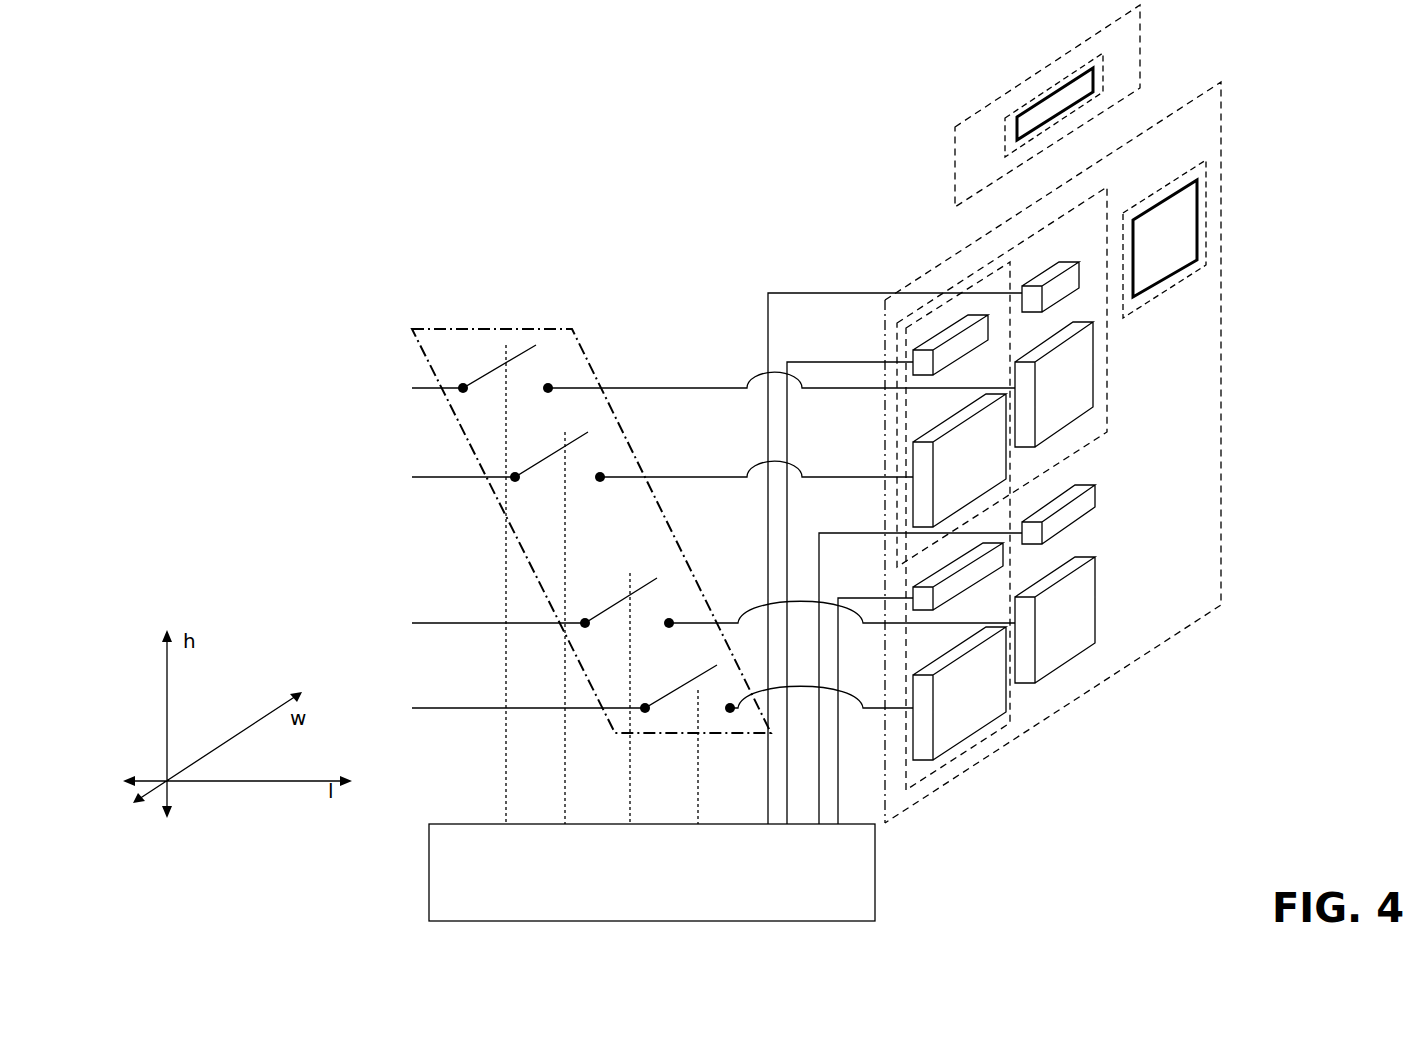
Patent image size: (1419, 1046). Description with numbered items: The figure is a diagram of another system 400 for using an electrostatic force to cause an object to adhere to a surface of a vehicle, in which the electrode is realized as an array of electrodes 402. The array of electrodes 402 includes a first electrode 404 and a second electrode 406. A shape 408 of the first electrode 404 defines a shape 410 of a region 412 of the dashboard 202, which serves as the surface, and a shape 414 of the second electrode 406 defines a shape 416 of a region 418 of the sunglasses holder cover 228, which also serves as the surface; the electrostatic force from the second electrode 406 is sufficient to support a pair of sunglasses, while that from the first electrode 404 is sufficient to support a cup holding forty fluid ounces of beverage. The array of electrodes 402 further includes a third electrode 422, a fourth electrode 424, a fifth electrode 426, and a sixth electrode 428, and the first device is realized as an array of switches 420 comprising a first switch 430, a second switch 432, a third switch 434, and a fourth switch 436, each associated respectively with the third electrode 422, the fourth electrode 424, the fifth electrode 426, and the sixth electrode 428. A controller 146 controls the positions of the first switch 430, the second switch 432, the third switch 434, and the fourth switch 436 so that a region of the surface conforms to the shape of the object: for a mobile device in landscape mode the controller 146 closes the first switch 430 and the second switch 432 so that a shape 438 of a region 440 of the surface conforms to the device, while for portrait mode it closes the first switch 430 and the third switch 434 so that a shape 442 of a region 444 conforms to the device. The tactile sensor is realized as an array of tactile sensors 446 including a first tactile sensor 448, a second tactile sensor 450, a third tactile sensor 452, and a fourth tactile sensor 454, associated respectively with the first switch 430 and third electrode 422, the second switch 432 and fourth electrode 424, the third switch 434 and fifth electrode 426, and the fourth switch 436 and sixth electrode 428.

The system 400 is at (265, 108).
The controller 146 is at (677, 886).
The dashboard 202 is at (1167, 171).
The sunglasses holder cover 228 is at (955, 150).
The array of electrodes 402 is at (1120, 395).
The first electrode 404 is at (1187, 235).
The second electrode 406 is at (1172, 85).
The shape of the first electrode 408 is at (1187, 263).
The shape of the region of the dashboard 410 is at (1248, 219).
The region of the dashboard 412 is at (1207, 182).
The shape of the second electrode 414 is at (1092, 83).
The shape of the region of the sunglasses holder cover 416 is at (1016, 86).
The region of the sunglasses holder cover 418 is at (1022, 108).
The array of switches 420 is at (420, 330).
The third electrode 422 is at (987, 460).
The fourth electrode 424 is at (1087, 381).
The fifth electrode 426 is at (987, 694).
The sixth electrode 428 is at (1087, 620).
The first switch 430 is at (573, 443).
The second switch 432 is at (488, 372).
The third switch 434 is at (675, 692).
The fourth switch 436 is at (647, 586).
The shape of the region for landscape mode 438 is at (1119, 377).
The region of the surface for landscape mode 440 is at (1107, 383).
The shape of the region for portrait mode 442 is at (981, 552).
The region of the surface for portrait mode 444 is at (967, 757).
The array of tactile sensors 446 is at (1098, 390).
The first tactile sensor 448 is at (958, 333).
The second tactile sensor 450 is at (1062, 288).
The third tactile sensor 452 is at (1000, 565).
The fourth tactile sensor 454 is at (1088, 503).